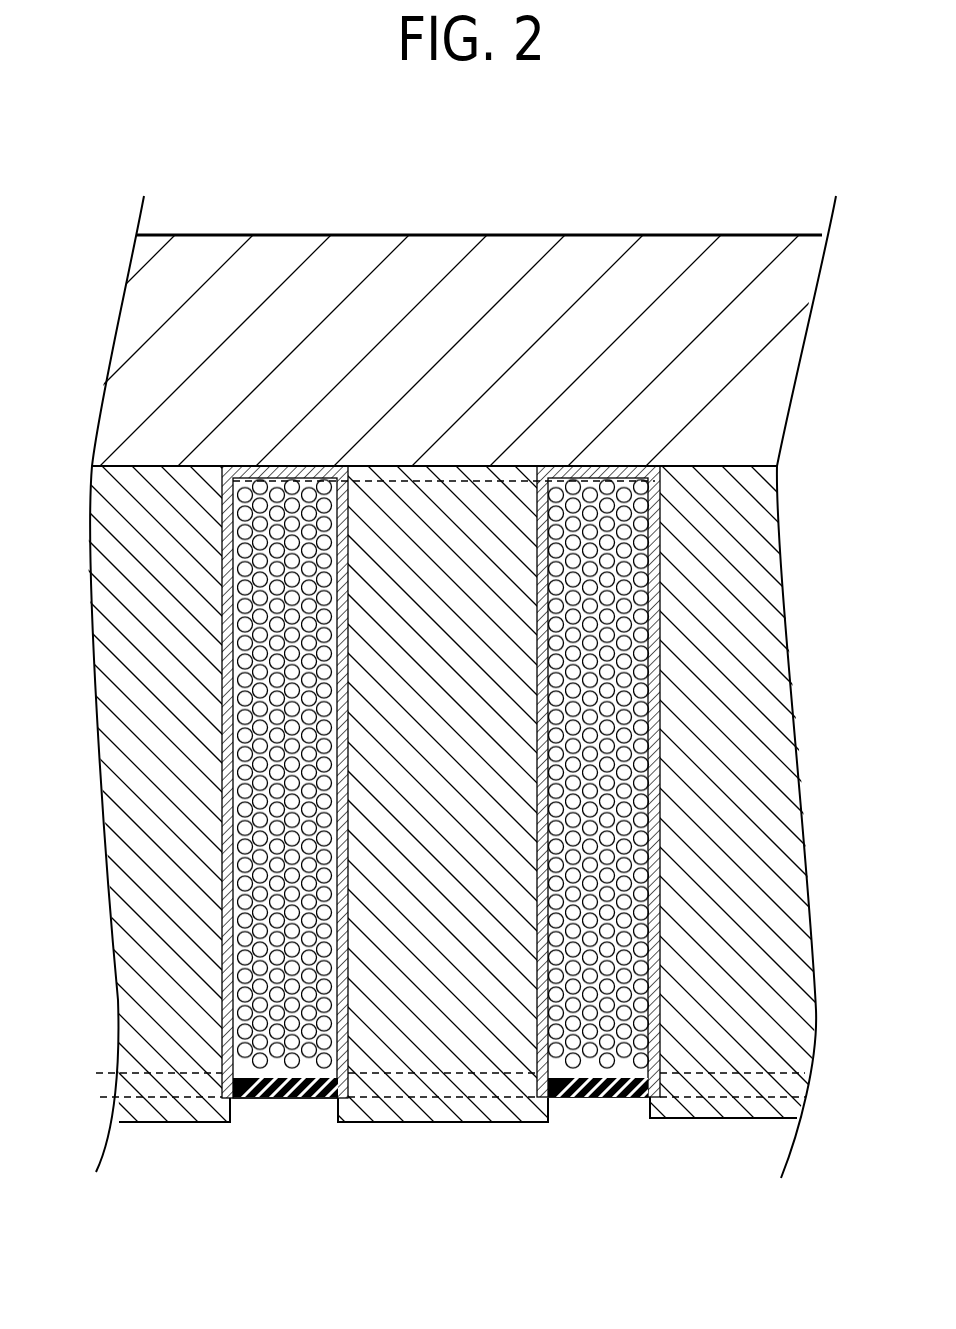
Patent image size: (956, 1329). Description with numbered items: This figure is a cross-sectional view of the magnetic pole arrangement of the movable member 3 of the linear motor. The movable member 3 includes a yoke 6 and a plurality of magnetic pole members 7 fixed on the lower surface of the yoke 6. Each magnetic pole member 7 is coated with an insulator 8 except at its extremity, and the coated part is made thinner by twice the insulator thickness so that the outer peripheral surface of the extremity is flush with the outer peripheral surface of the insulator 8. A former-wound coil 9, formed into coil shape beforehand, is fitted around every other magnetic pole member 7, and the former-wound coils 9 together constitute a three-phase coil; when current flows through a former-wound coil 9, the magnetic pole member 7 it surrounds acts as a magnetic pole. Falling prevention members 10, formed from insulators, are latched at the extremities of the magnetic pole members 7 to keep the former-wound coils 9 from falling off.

The movable member 3 is at (713, 233).
The yoke 6 is at (270, 283).
The magnetic pole member 7 is at (447, 570).
The insulator 8 is at (400, 468).
The former-wound coil 9 is at (290, 505).
The falling prevention member 10 is at (285, 1100).